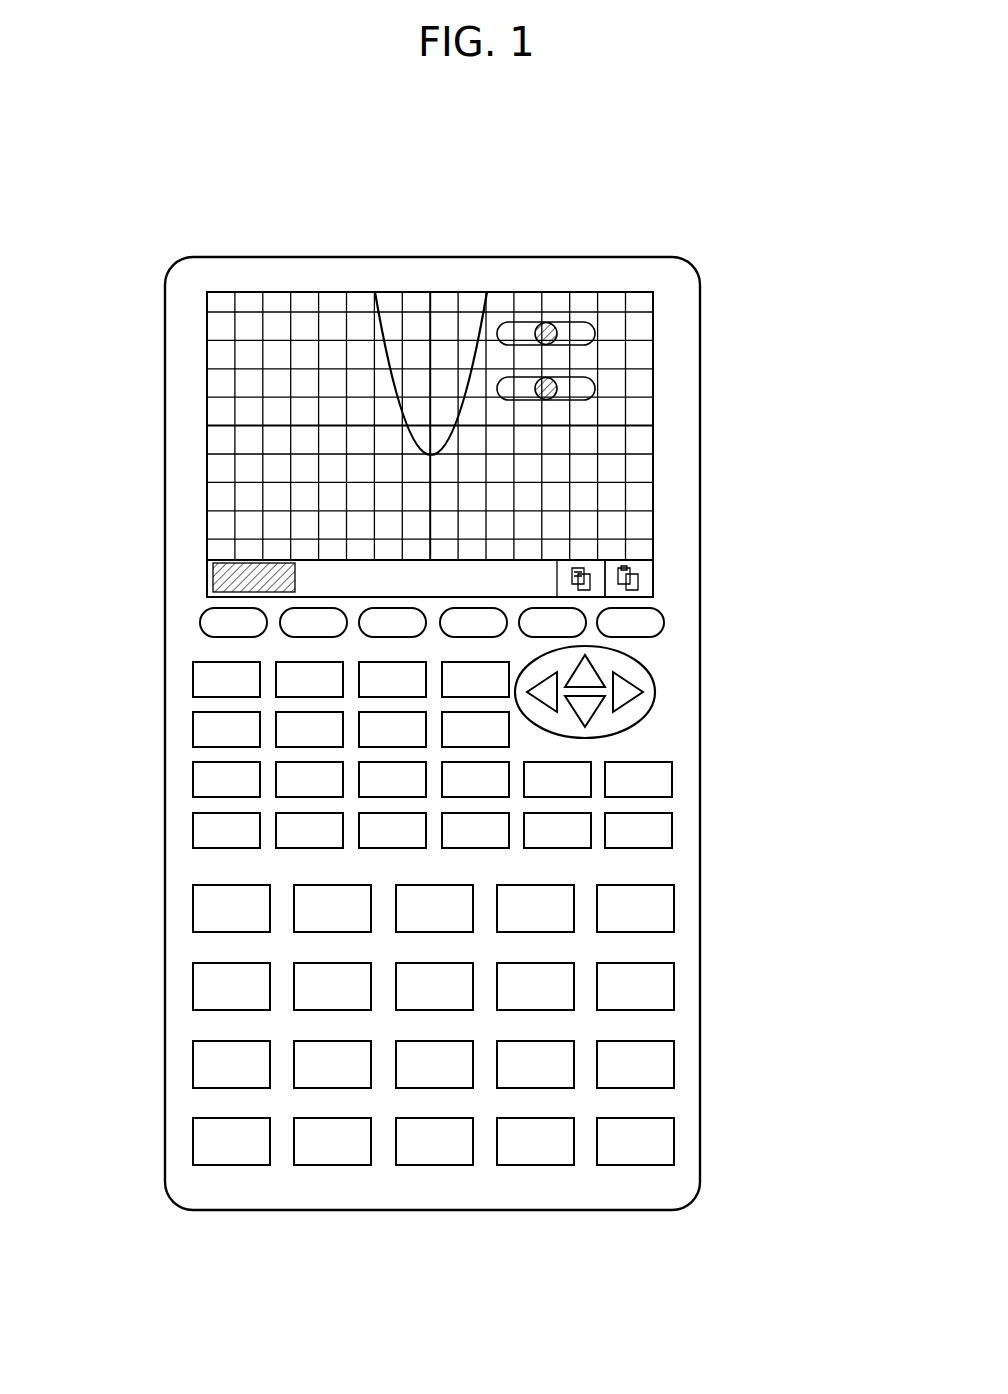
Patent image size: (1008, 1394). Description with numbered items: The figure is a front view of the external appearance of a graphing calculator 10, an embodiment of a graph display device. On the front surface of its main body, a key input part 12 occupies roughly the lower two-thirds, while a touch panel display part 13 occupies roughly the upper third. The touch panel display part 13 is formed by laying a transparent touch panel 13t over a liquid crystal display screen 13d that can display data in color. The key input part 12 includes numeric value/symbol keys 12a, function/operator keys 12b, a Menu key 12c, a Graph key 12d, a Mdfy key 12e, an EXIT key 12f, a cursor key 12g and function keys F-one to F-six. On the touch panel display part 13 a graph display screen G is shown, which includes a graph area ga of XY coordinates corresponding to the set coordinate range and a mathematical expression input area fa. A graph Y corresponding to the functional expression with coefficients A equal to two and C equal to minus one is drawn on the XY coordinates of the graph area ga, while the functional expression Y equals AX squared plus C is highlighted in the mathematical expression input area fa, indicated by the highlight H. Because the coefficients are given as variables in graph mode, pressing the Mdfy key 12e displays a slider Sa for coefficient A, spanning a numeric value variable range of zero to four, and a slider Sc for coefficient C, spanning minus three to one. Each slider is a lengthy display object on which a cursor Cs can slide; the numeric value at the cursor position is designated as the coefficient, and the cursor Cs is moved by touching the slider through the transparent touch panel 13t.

The graphing calculator 10 is at (500, 198).
The touch panel display part 13 is at (792, 380).
The liquid crystal display screen 13d is at (457, 389).
The transparent touch panel 13t is at (652, 468).
The key input part 12 is at (792, 810).
The numeric value/symbol keys 12a is at (165, 880).
The function/operator keys 12b is at (461, 881).
The [Menu] key 12c is at (493, 663).
The [Graph] key 12d is at (297, 711).
The [Mdfy] key 12e is at (373, 747).
The [EXIT] key 12f is at (507, 737).
The cursor key 12g is at (648, 683).
The graph display screen G is at (123, 440).
The graph area ga is at (207, 417).
The mathematical expression input area fa is at (232, 563).
The highlighted expression area H is at (387, 540).
The graph Y is at (382, 330).
The slider of coefficient A Sa is at (614, 282).
The slider of coefficient C Sc is at (595, 388).
The cursor of the slider Cs is at (562, 322).